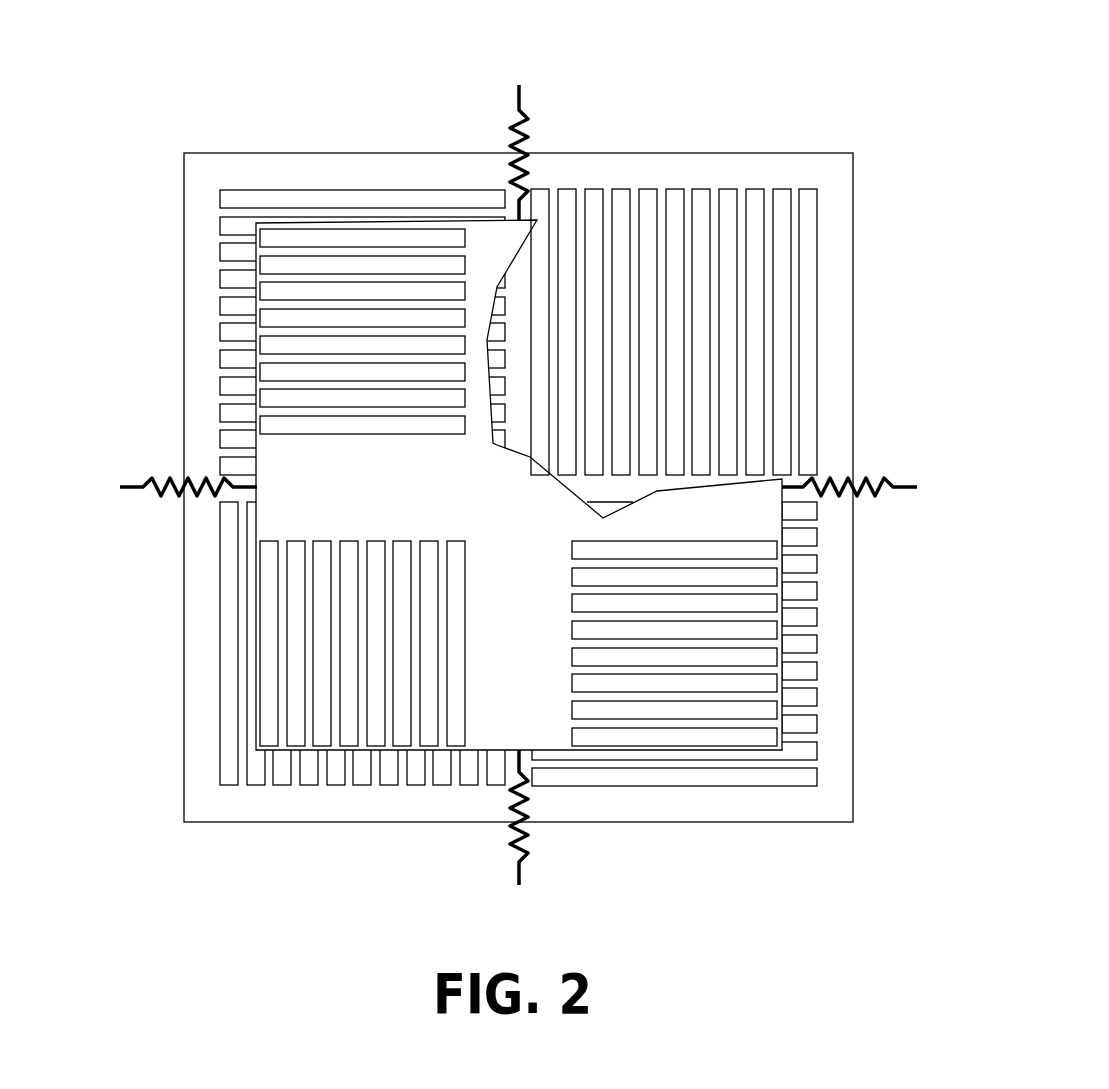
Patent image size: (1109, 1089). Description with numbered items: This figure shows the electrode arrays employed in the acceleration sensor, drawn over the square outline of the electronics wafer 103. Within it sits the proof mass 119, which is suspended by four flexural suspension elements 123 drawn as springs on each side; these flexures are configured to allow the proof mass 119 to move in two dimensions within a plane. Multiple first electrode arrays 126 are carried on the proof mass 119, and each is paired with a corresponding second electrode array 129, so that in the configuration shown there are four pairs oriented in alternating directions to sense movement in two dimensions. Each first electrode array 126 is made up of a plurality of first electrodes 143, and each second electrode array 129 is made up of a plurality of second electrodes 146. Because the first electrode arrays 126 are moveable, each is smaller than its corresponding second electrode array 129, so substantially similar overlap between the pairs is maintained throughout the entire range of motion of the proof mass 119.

The electronics wafer 103 is at (705, 808).
The proof mass 119 is at (537, 713).
The flexural suspension elements 123 is at (519, 87).
The first electrode arrays 126 is at (555, 537).
The second electrode arrays 129 is at (390, 175).
The first electrodes 143 is at (313, 240).
The second electrodes 146 is at (807, 302).